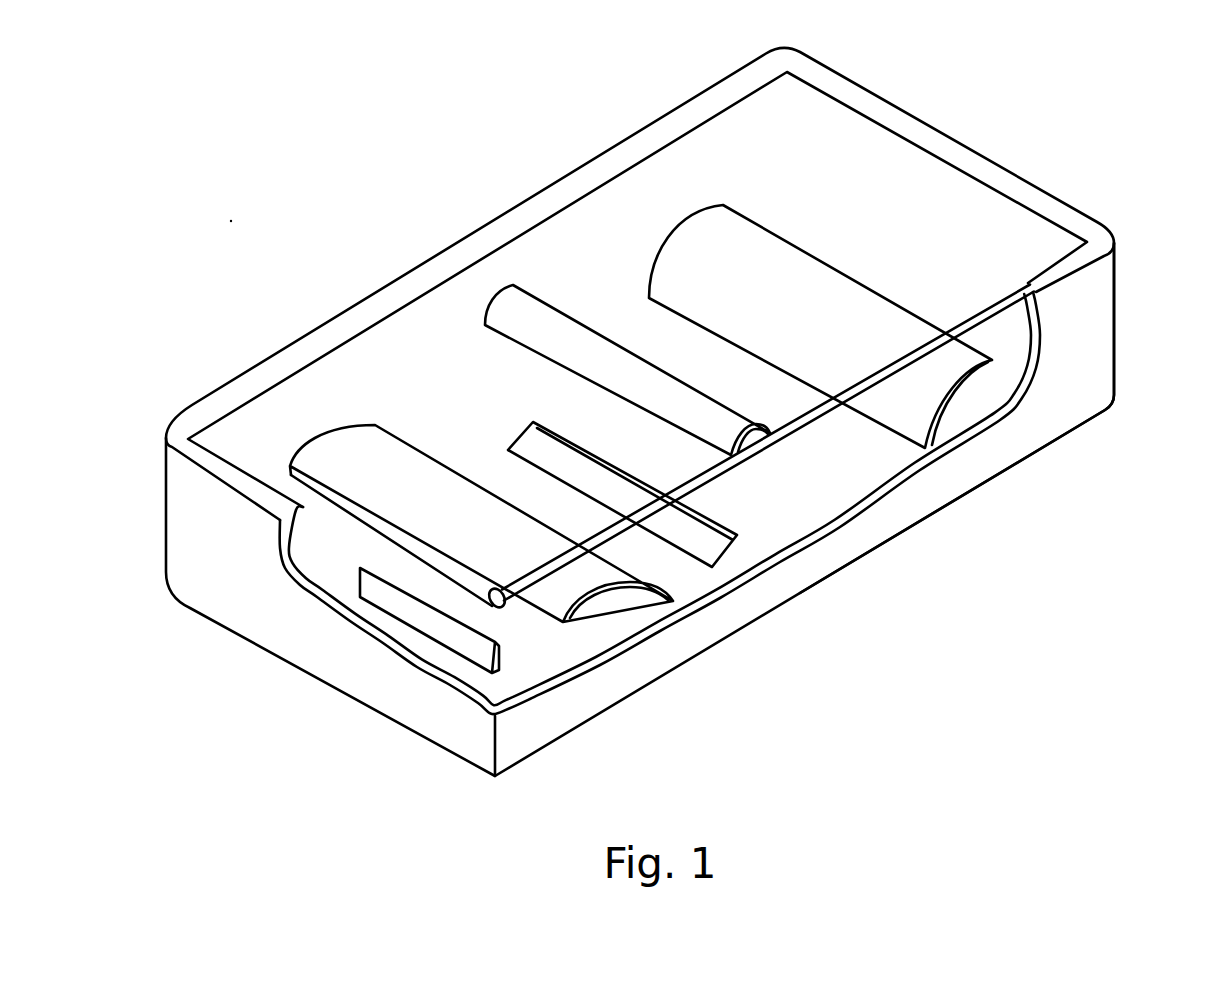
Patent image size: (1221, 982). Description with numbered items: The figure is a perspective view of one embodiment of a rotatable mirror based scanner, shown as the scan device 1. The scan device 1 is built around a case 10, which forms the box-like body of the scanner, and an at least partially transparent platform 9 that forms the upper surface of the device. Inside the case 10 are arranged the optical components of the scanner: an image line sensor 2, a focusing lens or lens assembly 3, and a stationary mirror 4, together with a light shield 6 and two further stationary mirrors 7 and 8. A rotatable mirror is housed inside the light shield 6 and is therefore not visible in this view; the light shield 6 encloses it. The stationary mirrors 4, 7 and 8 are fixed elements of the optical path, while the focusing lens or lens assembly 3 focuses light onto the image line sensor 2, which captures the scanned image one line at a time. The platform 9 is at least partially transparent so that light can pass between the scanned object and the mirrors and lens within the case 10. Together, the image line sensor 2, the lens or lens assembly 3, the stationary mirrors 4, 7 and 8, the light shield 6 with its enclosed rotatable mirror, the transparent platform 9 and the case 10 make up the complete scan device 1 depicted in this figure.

The scan device 1 is at (150, 350).
The image line sensor 2 is at (463, 645).
The focusing lens or lens assembly 3 is at (505, 603).
The stationary mirror 4 is at (710, 545).
The light shield 6 is at (530, 305).
The stationary mirror 7 is at (390, 460).
The stationary mirror 8 is at (693, 258).
The at least partially transparent platform 9 is at (330, 372).
The case 10 is at (1097, 328).